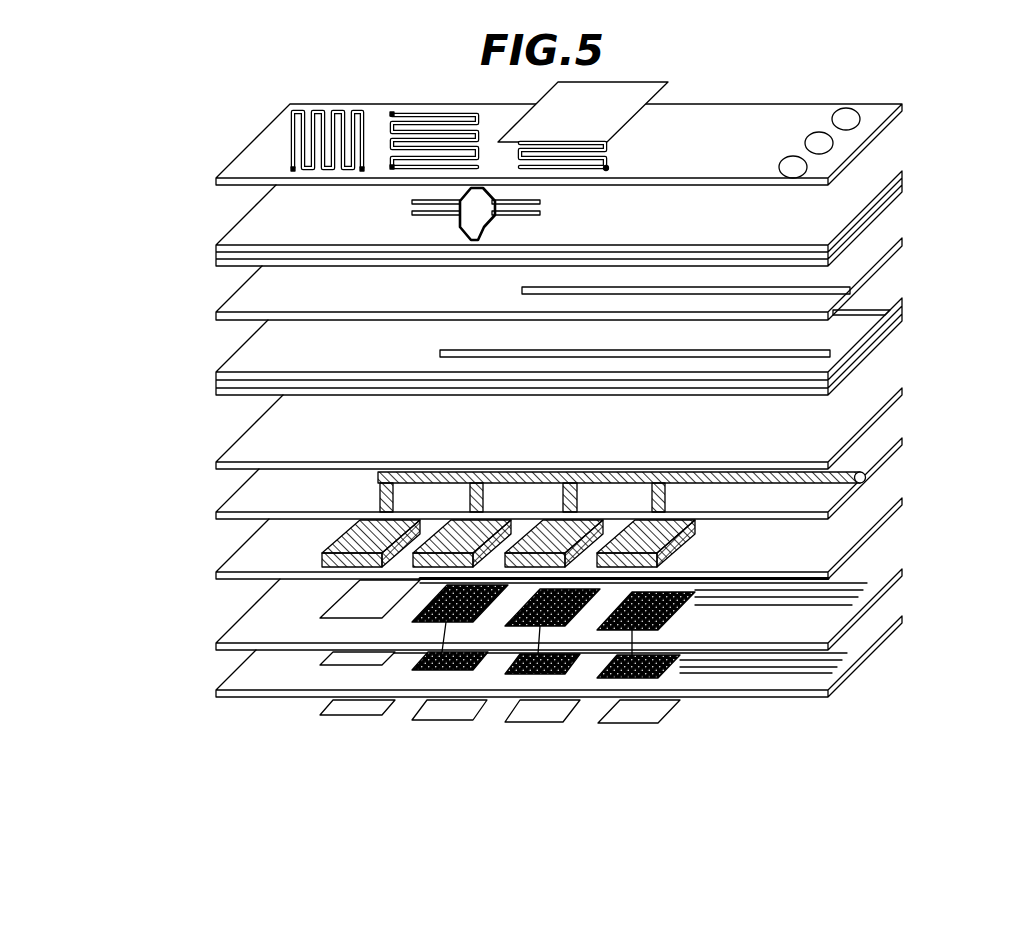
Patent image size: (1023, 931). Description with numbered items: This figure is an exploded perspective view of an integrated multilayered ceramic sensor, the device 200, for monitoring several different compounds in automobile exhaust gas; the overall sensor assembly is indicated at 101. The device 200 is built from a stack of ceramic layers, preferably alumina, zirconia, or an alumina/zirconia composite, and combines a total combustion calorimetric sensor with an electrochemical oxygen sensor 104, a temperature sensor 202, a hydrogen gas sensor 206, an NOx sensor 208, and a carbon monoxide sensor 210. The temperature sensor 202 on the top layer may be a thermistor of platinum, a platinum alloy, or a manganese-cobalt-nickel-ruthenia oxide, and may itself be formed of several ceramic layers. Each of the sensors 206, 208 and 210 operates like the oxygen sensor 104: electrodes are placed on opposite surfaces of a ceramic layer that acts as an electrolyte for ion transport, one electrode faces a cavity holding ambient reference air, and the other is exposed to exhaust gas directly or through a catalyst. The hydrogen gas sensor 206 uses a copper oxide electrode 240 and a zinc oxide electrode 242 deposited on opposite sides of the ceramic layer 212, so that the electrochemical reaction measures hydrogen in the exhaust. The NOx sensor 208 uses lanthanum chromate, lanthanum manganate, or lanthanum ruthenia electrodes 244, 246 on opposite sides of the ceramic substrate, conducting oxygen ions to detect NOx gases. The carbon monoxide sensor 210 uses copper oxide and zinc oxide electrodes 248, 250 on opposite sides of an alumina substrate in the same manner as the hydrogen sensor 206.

The sensor assembly 101 is at (192, 125).
The temperature sensor 202 is at (300, 112).
The ceramic layer 212 is at (877, 580).
The device 200 is at (932, 757).
The electrochemical oxygen sensor 104 is at (322, 680).
The carbon monoxide sensor 210 is at (420, 680).
The NOx sensor 208 is at (512, 682).
The hydrogen gas sensor 206 is at (608, 684).
The zinc oxide electrode 250 is at (433, 672).
The copper oxide electrode 248 is at (453, 672).
The lanthanum-based electrode 246 is at (521, 676).
The lanthanum-based electrode 244 is at (548, 676).
The zinc oxide electrode 242 is at (628, 680).
The copper oxide electrode 240 is at (652, 680).